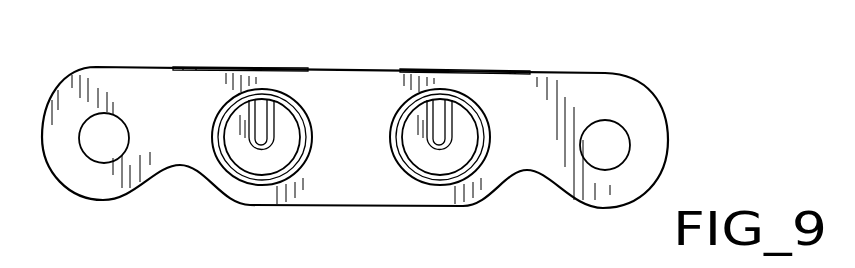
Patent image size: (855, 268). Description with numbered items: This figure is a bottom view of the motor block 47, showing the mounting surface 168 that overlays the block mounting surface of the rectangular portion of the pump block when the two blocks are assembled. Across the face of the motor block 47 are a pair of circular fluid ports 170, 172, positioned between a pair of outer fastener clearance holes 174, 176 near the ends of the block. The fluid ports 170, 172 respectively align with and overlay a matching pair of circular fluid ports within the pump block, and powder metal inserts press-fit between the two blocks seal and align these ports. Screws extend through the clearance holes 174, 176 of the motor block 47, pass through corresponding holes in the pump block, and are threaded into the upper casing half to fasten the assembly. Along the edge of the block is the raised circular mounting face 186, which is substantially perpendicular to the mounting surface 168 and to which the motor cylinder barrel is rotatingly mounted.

The motor block 47 is at (366, 57).
The mounting surface 168 is at (543, 110).
The circular fluid port 170 is at (446, 166).
The circular fluid port 172 is at (278, 170).
The outer fastener clearance hole 174 is at (630, 146).
The outer fastener clearance hole 176 is at (84, 150).
The raised circular mounting face 186 is at (216, 66).